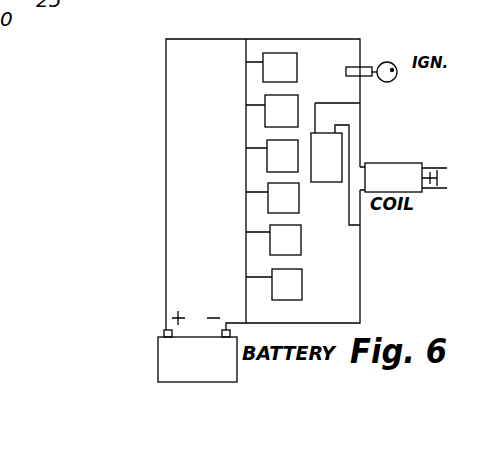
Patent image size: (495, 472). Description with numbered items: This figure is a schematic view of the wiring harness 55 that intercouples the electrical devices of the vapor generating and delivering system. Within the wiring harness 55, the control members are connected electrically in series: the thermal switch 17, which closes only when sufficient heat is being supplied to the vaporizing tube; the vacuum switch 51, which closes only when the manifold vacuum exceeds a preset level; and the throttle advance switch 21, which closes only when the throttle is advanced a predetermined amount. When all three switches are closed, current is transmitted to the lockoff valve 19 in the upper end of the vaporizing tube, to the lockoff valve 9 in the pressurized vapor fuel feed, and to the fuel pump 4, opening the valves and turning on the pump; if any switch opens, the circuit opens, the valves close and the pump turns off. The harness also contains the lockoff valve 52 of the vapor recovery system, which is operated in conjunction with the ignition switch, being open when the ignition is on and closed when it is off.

The wiring harness 55 is at (166, 220).
The lockoff valve 19 is at (275, 77).
The fuel pump 4 is at (278, 113).
The vacuum switch 51 is at (283, 158).
The lockoff valve 9 is at (297, 197).
The thermal switch 17 is at (283, 242).
The throttle advance switch 21 is at (290, 283).
The lockoff valve 52 is at (328, 152).